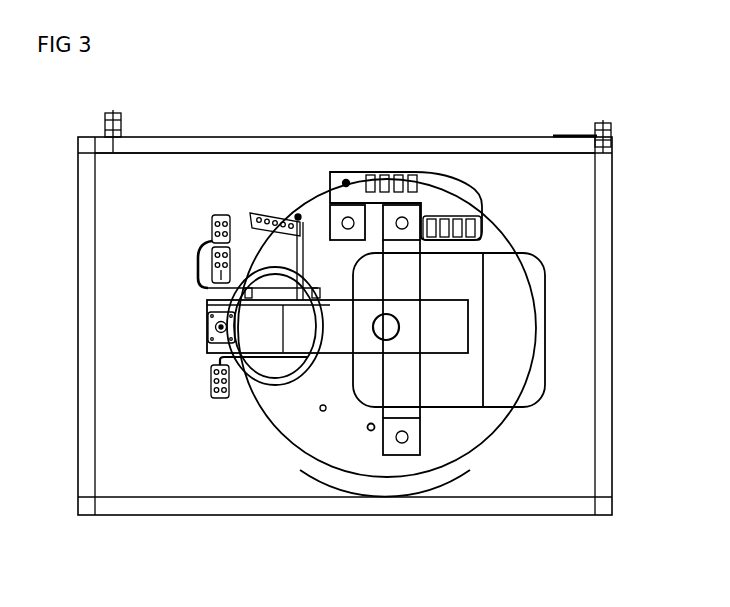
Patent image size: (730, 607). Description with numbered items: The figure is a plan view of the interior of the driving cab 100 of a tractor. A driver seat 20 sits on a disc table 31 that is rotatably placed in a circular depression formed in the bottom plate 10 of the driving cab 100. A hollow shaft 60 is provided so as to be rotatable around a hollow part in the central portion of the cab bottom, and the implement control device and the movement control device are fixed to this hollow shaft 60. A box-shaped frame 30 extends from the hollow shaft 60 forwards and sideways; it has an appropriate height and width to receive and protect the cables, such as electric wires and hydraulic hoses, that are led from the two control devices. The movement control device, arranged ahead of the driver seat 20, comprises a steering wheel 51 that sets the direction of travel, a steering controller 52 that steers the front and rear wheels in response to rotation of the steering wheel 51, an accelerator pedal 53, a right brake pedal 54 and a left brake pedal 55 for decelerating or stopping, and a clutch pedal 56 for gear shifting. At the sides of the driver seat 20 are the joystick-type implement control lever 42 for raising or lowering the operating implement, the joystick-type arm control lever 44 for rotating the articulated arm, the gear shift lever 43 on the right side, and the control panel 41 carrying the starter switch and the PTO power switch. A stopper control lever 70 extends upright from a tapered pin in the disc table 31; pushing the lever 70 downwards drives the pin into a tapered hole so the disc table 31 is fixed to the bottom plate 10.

The driving cab 100 is at (608, 220).
The bottom plate 10 is at (535, 177).
The driver seat 20 is at (540, 322).
The box-shaped frame 30 is at (345, 298).
The disc table 31 is at (470, 435).
The control panel 41 is at (450, 190).
The implement control lever 42 is at (346, 179).
The gear shift lever 43 is at (400, 220).
The arm control lever 44 is at (403, 445).
The steering wheel 51 is at (265, 383).
The steering controller 52 is at (208, 330).
The accelerator pedal 53 is at (265, 212).
The right brake pedal 54 is at (210, 222).
The left brake pedal 55 is at (210, 268).
The clutch pedal 56 is at (210, 385).
The hollow shaft 60 is at (376, 337).
The stopper control lever 70 is at (372, 432).